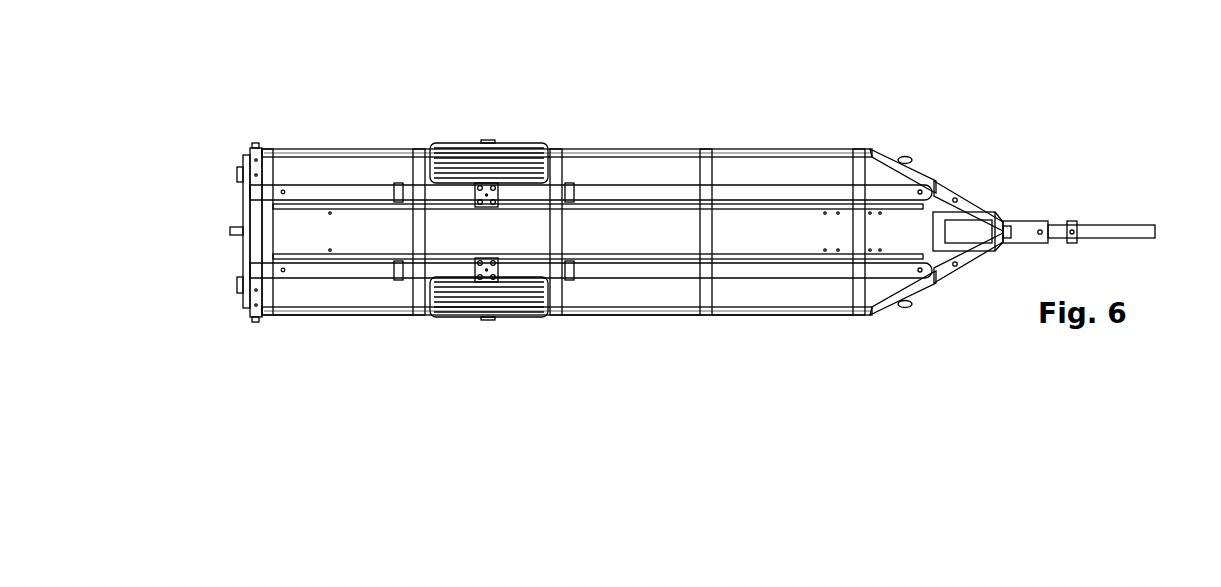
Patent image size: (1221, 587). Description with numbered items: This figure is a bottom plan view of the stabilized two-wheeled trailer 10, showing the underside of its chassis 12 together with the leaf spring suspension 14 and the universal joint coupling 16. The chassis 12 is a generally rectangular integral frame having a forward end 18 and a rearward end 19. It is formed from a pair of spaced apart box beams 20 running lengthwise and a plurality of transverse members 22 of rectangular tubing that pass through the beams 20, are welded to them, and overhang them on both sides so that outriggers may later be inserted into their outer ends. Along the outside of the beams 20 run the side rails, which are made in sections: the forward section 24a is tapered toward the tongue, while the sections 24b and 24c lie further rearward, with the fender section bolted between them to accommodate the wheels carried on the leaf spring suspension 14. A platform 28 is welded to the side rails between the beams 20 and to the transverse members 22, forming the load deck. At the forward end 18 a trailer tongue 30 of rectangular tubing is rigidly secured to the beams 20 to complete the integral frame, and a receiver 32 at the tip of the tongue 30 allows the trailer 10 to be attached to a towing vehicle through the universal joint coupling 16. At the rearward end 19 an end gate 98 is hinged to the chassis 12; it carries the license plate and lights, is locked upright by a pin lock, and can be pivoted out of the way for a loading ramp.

The stabilized two-wheeled trailer 10 is at (567, 163).
The chassis 12 is at (447, 254).
The leaf spring suspension 14 is at (570, 219).
The universal joint coupling 16 is at (1134, 256).
The forward end 18 is at (950, 205).
The rearward end 19 is at (315, 208).
The box beams 20 is at (591, 242).
The transverse members 22 is at (674, 205).
The forward side rail section 24a is at (826, 347).
The side rail section 24b is at (677, 352).
The rearward side rail section 24c is at (300, 342).
The platform 28 is at (598, 153).
The trailer tongue 30 is at (1012, 212).
The receiver 32 is at (1079, 204).
The end gate 98 is at (205, 214).